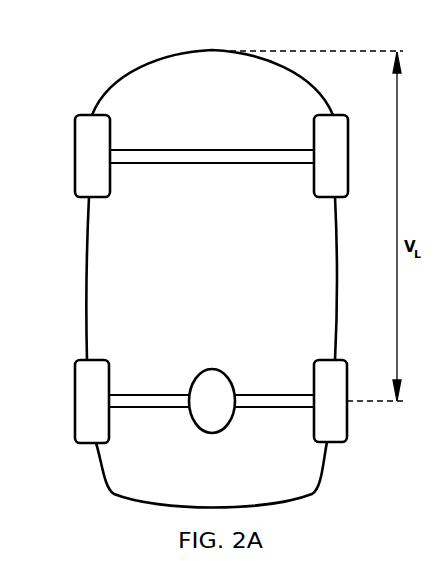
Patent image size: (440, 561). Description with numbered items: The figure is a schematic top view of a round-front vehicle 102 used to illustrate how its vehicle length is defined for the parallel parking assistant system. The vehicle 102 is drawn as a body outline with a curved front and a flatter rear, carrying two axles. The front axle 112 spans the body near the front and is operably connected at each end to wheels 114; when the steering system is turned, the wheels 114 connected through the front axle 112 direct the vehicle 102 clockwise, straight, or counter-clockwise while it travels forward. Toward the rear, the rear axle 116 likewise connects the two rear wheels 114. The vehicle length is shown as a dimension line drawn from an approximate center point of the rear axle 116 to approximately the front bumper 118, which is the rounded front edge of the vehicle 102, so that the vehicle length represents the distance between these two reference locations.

The vehicle 102 is at (87, 264).
The front axle 112 is at (143, 150).
The wheels 114 is at (75, 135).
The rear axle 116 is at (143, 395).
The front bumper 118 is at (178, 54).